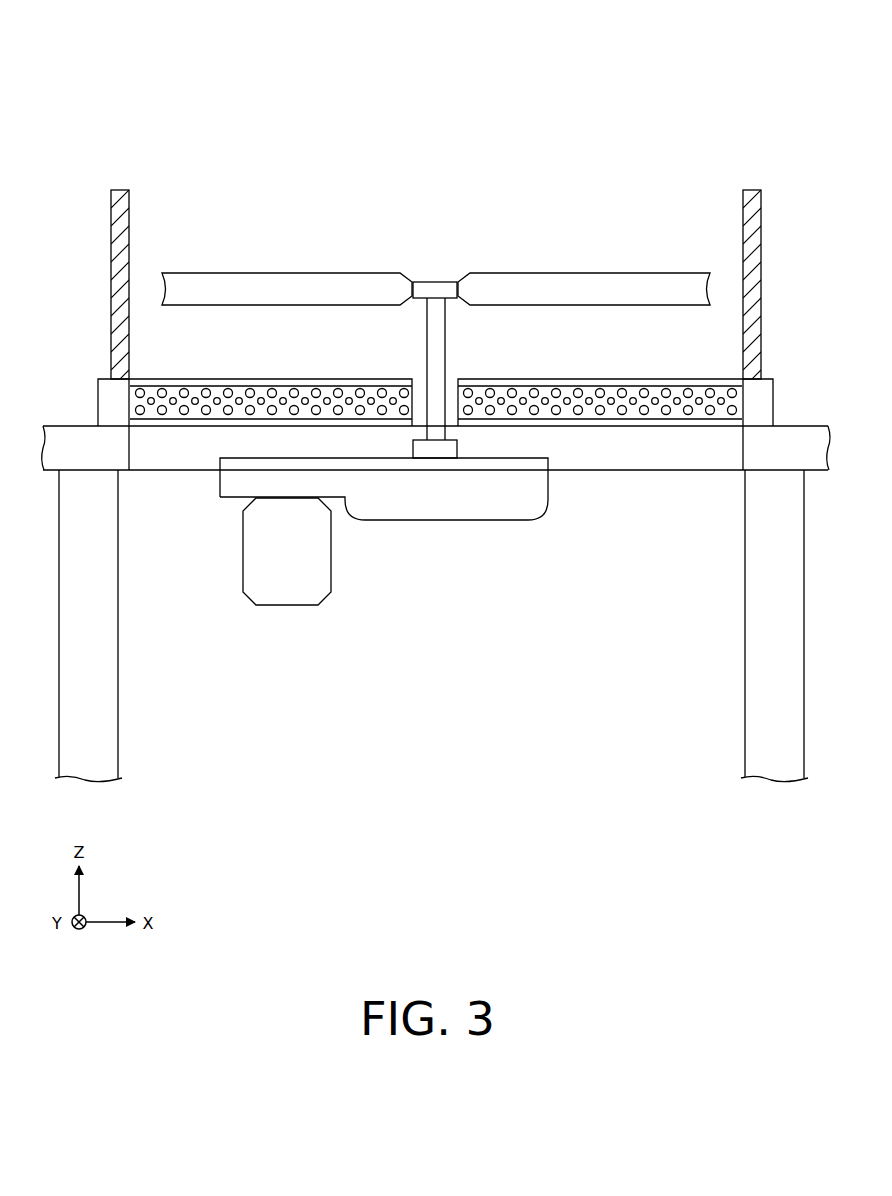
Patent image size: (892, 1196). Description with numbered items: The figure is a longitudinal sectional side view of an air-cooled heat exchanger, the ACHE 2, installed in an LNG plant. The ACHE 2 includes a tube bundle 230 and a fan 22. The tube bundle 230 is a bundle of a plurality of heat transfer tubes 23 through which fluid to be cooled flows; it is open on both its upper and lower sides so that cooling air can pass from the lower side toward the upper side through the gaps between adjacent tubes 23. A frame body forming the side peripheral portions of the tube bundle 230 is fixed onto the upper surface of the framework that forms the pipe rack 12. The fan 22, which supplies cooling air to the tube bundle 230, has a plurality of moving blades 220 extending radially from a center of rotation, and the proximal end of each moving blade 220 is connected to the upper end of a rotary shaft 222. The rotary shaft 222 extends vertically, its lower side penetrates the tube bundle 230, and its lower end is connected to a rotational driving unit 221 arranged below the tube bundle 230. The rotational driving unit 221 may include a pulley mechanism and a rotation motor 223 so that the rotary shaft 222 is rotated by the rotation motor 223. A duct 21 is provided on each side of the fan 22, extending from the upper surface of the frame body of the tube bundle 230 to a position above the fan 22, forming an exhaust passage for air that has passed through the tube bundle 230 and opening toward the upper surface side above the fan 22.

The ACHE 2 is at (712, 74).
The pipe rack 12 is at (119, 641).
The duct 21 is at (111, 239).
The fan 22 is at (182, 313).
The moving blades 220 is at (593, 273).
The rotational driving unit 221 is at (458, 603).
The rotary shaft 222 is at (447, 334).
The rotation motor 223 is at (285, 606).
The tubes 23 is at (229, 384).
The tube bundle 230 is at (317, 379).